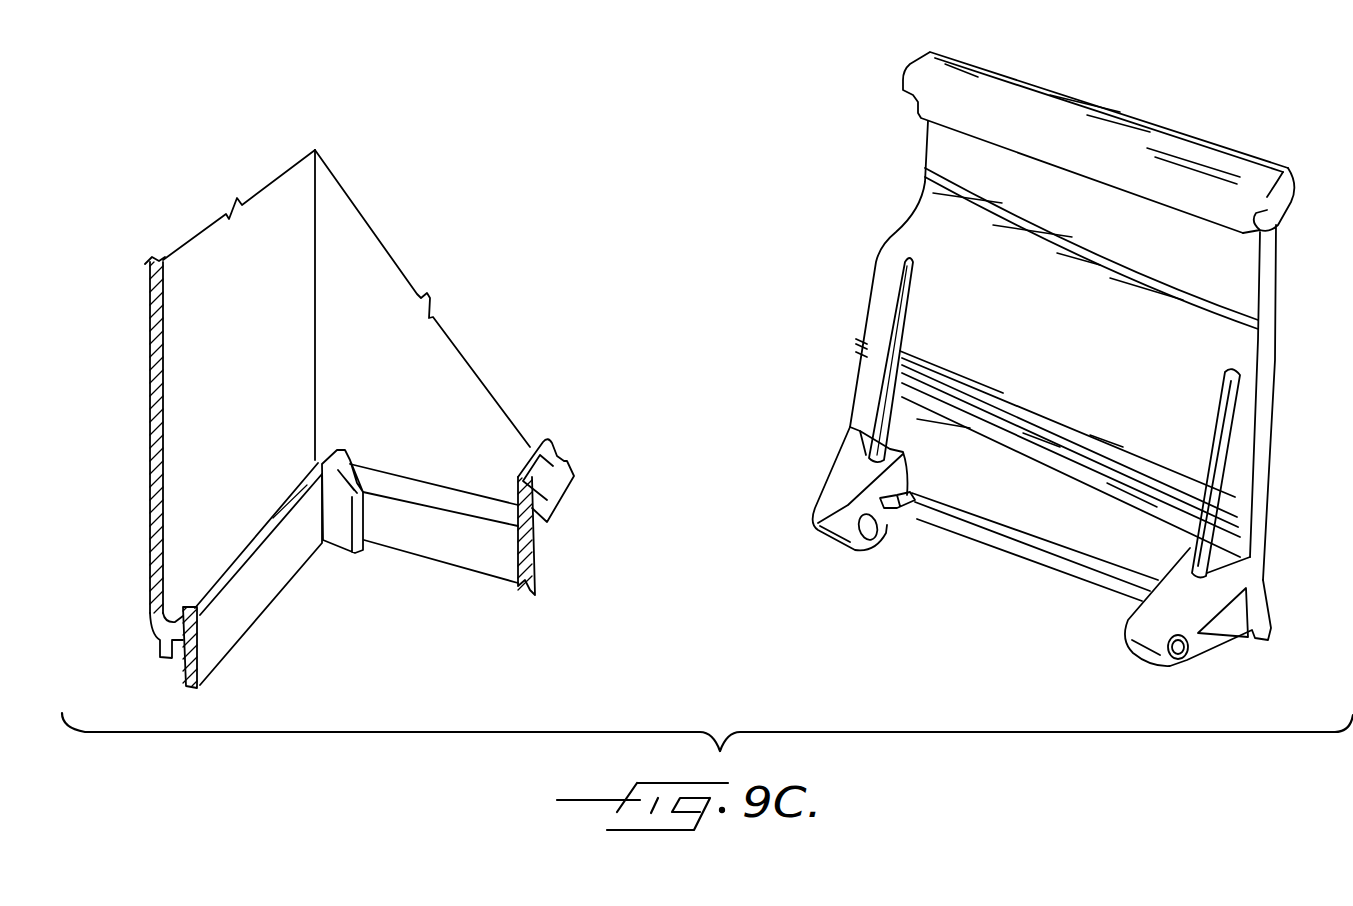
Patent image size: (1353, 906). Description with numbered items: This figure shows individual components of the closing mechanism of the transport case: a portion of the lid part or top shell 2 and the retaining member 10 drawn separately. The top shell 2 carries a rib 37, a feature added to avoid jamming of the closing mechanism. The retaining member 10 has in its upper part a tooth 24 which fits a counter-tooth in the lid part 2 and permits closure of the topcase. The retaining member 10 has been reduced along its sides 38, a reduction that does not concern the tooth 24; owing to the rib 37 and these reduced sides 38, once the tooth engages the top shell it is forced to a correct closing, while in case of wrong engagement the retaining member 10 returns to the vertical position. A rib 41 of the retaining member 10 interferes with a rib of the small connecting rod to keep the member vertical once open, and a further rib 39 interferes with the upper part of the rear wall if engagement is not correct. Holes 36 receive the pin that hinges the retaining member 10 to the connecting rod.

The lid part (top shell) 2 is at (150, 398).
The rib of the lid part 37 is at (342, 543).
The retaining member 10 is at (960, 283).
The tooth 24 is at (1173, 140).
The sides of retaining member 38 is at (897, 228).
The rib of the retaining member 41 is at (887, 517).
The rib of retaining member 39 is at (912, 518).
The holes 36 is at (1187, 647).